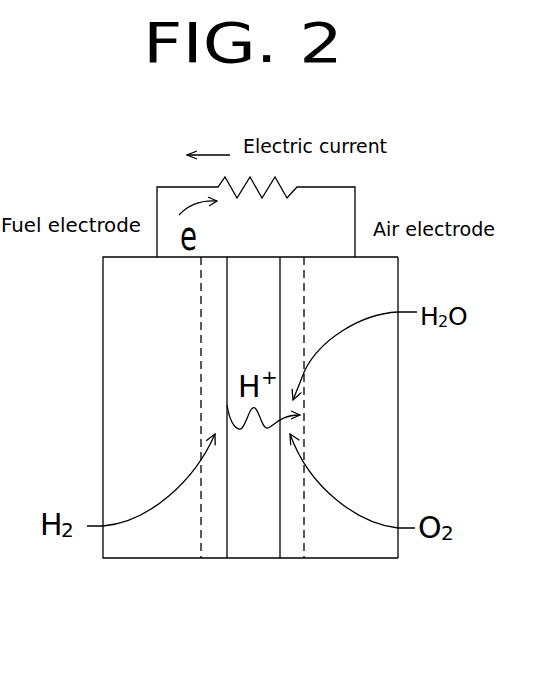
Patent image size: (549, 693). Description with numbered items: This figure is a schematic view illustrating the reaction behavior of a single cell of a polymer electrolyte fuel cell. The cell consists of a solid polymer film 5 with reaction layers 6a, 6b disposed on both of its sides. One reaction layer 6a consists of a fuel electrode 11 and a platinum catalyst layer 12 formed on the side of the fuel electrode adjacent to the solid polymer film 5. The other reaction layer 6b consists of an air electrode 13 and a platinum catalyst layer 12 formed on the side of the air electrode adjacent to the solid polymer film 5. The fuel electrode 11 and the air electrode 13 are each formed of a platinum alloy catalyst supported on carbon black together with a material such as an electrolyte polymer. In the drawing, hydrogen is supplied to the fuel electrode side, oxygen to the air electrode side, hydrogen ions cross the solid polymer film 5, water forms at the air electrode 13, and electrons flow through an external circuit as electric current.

The solid polymer film 5 is at (253, 522).
The reaction layer 6a is at (121, 405).
The reaction layer 6b is at (375, 418).
The fuel electrode 11 is at (120, 303).
The platinum catalyst layer 12 is at (295, 547).
The air electrode 13 is at (380, 284).